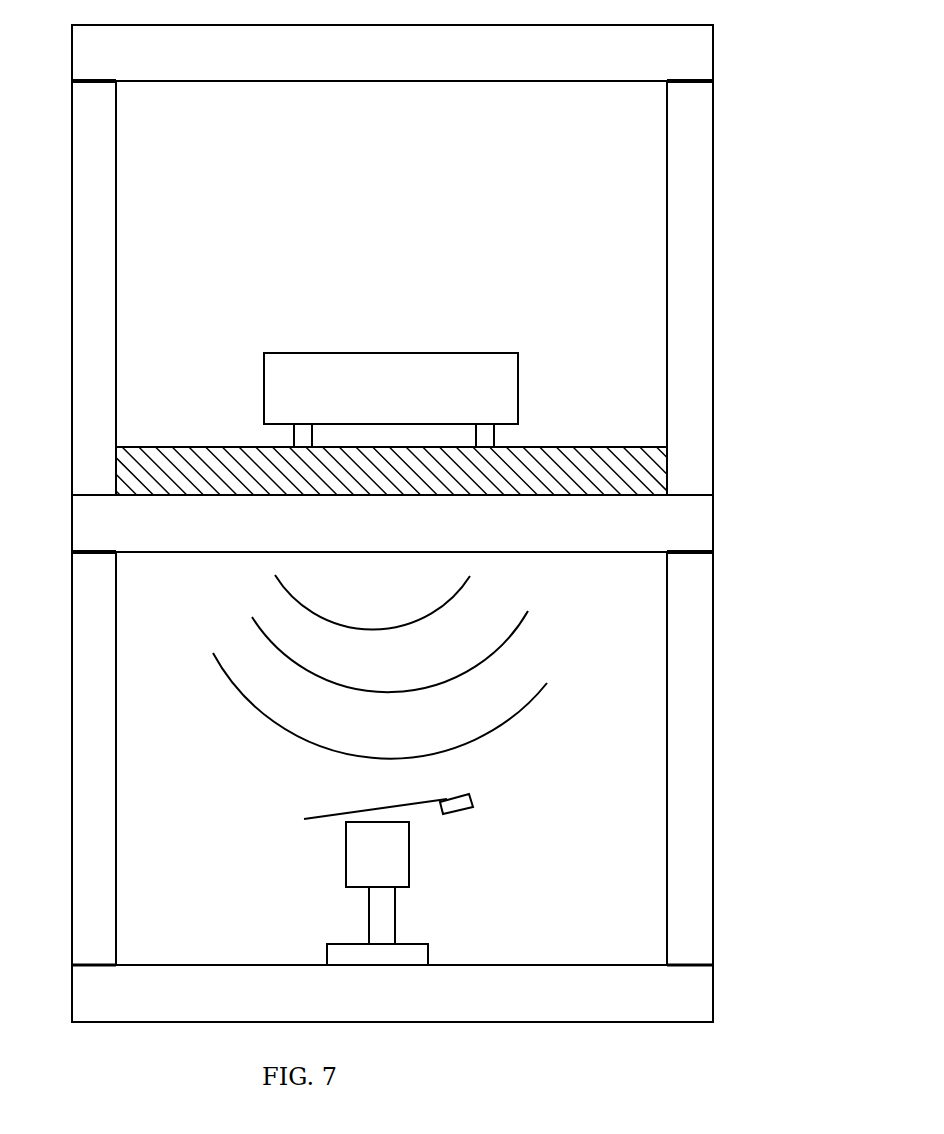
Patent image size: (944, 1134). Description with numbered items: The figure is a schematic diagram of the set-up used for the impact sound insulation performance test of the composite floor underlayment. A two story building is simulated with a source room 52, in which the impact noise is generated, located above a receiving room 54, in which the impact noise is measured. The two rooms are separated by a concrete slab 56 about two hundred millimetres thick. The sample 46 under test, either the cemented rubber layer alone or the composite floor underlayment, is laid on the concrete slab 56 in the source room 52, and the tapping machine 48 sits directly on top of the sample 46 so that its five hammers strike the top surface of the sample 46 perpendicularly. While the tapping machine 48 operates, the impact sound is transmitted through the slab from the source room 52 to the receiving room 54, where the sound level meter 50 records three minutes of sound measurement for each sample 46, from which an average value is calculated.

The samples 46 is at (657, 472).
The tapping machine 48 is at (501, 360).
The sound level meter 50 is at (398, 856).
The source room 52 is at (122, 215).
The receiving room 54 is at (122, 642).
The concrete slab 56 is at (688, 521).